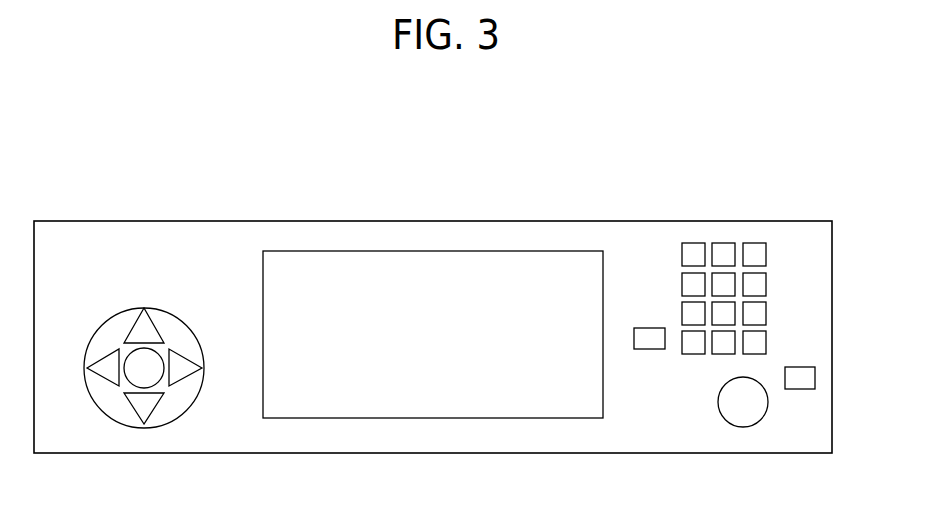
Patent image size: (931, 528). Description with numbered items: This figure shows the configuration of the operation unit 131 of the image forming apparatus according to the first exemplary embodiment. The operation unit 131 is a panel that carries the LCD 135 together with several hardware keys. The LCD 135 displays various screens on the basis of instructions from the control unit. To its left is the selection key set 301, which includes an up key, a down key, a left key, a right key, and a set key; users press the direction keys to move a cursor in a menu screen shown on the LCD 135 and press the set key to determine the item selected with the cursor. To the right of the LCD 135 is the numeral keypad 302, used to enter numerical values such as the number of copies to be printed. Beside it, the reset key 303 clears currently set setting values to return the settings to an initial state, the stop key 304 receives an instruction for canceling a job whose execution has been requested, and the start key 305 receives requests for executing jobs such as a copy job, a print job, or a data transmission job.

The operation unit 131 is at (413, 220).
The LCD 135 is at (515, 250).
The selection key set 301 is at (158, 307).
The numeral keypad 302 is at (690, 243).
The reset key 303 is at (650, 328).
The stop key 304 is at (803, 367).
The start key 305 is at (747, 427).